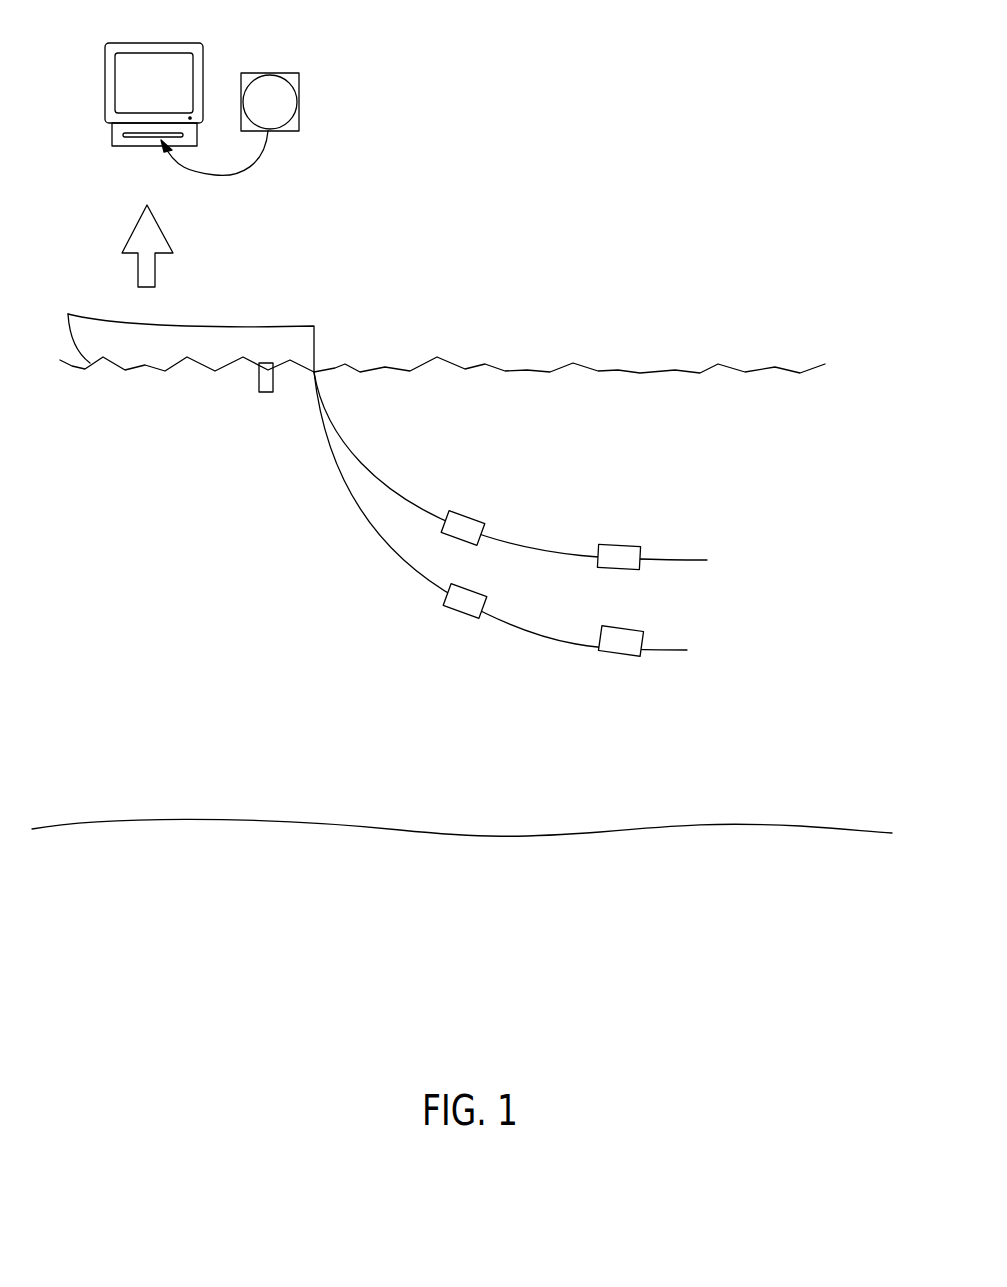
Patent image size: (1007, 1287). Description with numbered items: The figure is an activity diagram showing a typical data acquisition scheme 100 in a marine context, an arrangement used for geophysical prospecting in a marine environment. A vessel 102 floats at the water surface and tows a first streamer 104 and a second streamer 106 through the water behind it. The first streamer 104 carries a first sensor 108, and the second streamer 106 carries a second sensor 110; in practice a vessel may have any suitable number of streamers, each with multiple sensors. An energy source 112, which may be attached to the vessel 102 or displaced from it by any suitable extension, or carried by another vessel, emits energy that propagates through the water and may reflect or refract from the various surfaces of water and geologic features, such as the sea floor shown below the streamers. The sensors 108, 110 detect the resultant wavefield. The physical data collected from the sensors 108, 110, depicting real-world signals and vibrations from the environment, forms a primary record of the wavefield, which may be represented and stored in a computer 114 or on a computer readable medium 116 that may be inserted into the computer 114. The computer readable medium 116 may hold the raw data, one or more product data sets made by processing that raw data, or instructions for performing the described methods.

The data acquisition scheme 100 is at (566, 163).
The vessel 102 is at (238, 325).
The first streamer 104 is at (351, 457).
The second streamer 106 is at (343, 508).
The first sensor 108 is at (463, 512).
The second sensor 110 is at (457, 608).
The energy source 112 is at (253, 382).
The computer 114 is at (105, 63).
The computer readable medium 116 is at (280, 75).